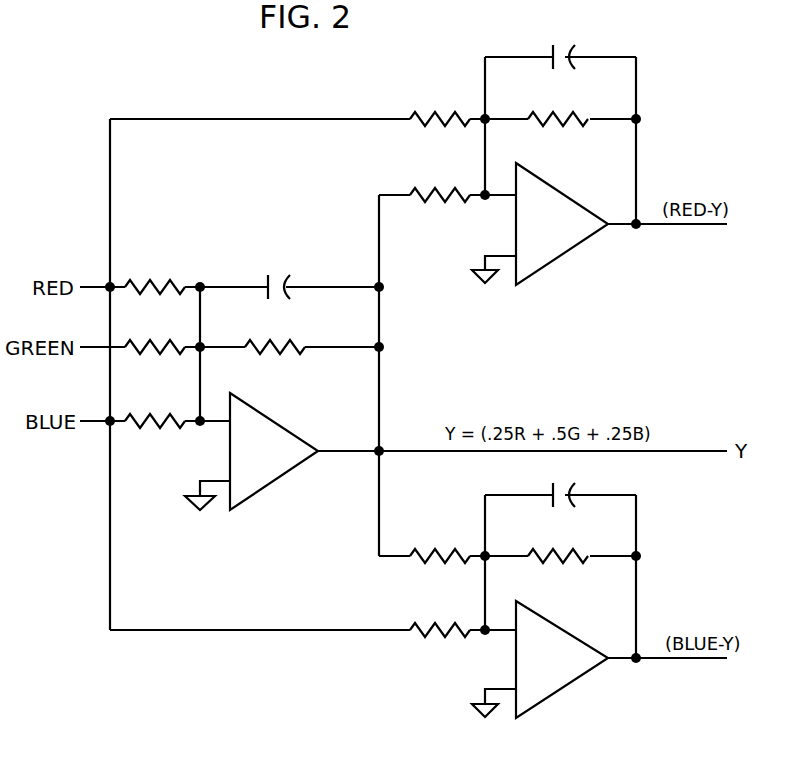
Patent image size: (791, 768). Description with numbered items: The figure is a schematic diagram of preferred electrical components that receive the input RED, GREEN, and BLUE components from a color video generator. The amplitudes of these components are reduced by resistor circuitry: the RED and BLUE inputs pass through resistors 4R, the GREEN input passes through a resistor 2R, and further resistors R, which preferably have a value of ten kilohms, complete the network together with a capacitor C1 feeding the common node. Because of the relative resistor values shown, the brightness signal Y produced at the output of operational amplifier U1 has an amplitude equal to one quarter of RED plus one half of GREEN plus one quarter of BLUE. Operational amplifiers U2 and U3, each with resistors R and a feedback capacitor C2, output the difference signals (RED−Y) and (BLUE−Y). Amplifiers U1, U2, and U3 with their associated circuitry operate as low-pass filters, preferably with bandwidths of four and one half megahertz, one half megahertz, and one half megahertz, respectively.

The operational amplifier U1 is at (251, 451).
The operational amplifier U2 is at (540, 224).
The operational amplifier U3 is at (540, 659).
The capacitor C1 is at (278, 272).
The capacitor C2 is at (561, 263).
The resistor R is at (416, 363).
The resistor 2R is at (155, 336).
The resistor 4R is at (155, 342).